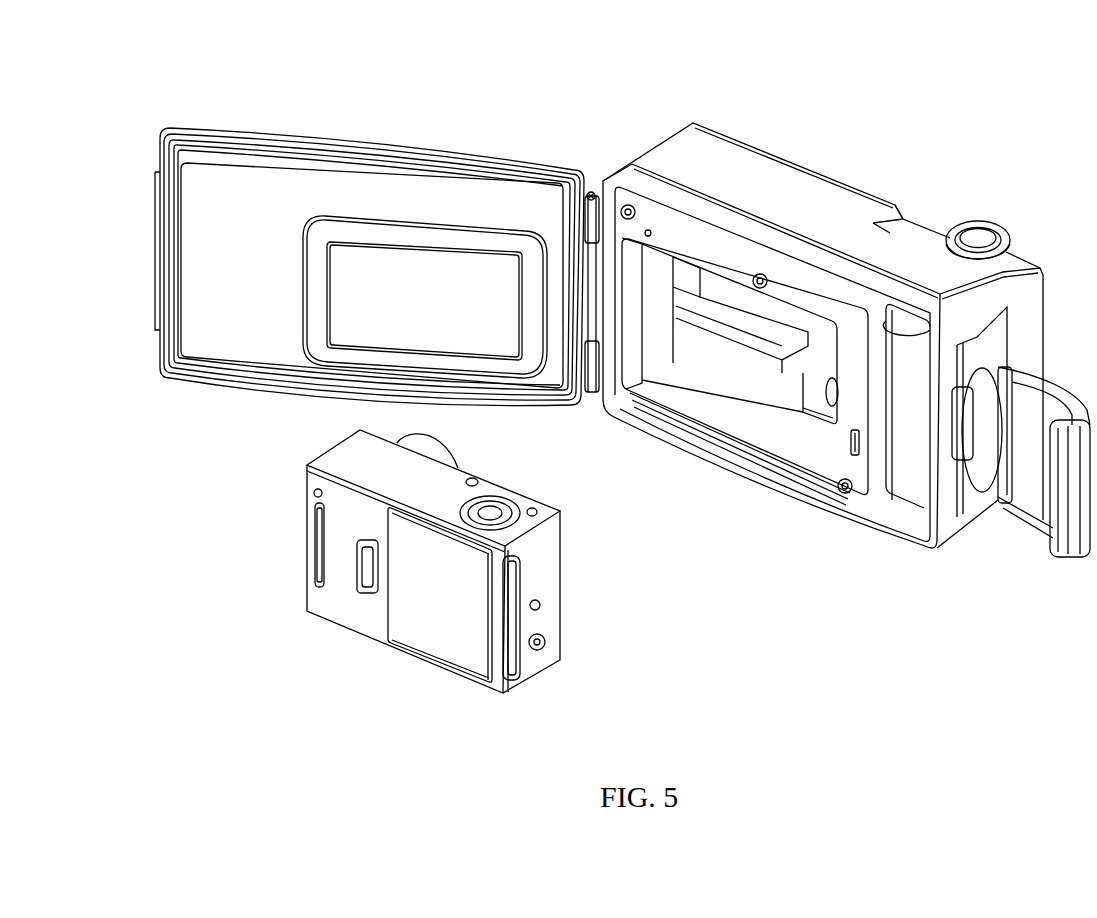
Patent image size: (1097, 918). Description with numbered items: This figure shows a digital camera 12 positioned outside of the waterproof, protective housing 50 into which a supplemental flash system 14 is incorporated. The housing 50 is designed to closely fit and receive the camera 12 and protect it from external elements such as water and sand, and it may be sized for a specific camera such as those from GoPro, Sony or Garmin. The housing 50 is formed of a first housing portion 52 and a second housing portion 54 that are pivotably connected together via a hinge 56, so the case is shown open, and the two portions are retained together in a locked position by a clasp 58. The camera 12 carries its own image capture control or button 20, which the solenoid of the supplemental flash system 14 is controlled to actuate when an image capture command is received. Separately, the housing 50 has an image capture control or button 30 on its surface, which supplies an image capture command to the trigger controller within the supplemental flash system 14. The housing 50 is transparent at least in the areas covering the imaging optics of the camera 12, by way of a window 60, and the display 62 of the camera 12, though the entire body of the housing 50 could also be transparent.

The digital camera 12 is at (470, 696).
The supplemental flash system 14 is at (732, 498).
The image capture control or button 20 is at (490, 508).
The image capture control or button 30 is at (978, 238).
The housing 50 is at (627, 150).
The first housing portion 52 is at (715, 163).
The second housing portion 54 is at (268, 134).
The hinge 56 is at (590, 193).
The clasp 58 is at (1018, 523).
The window 60 is at (380, 313).
The display 62 is at (420, 628).